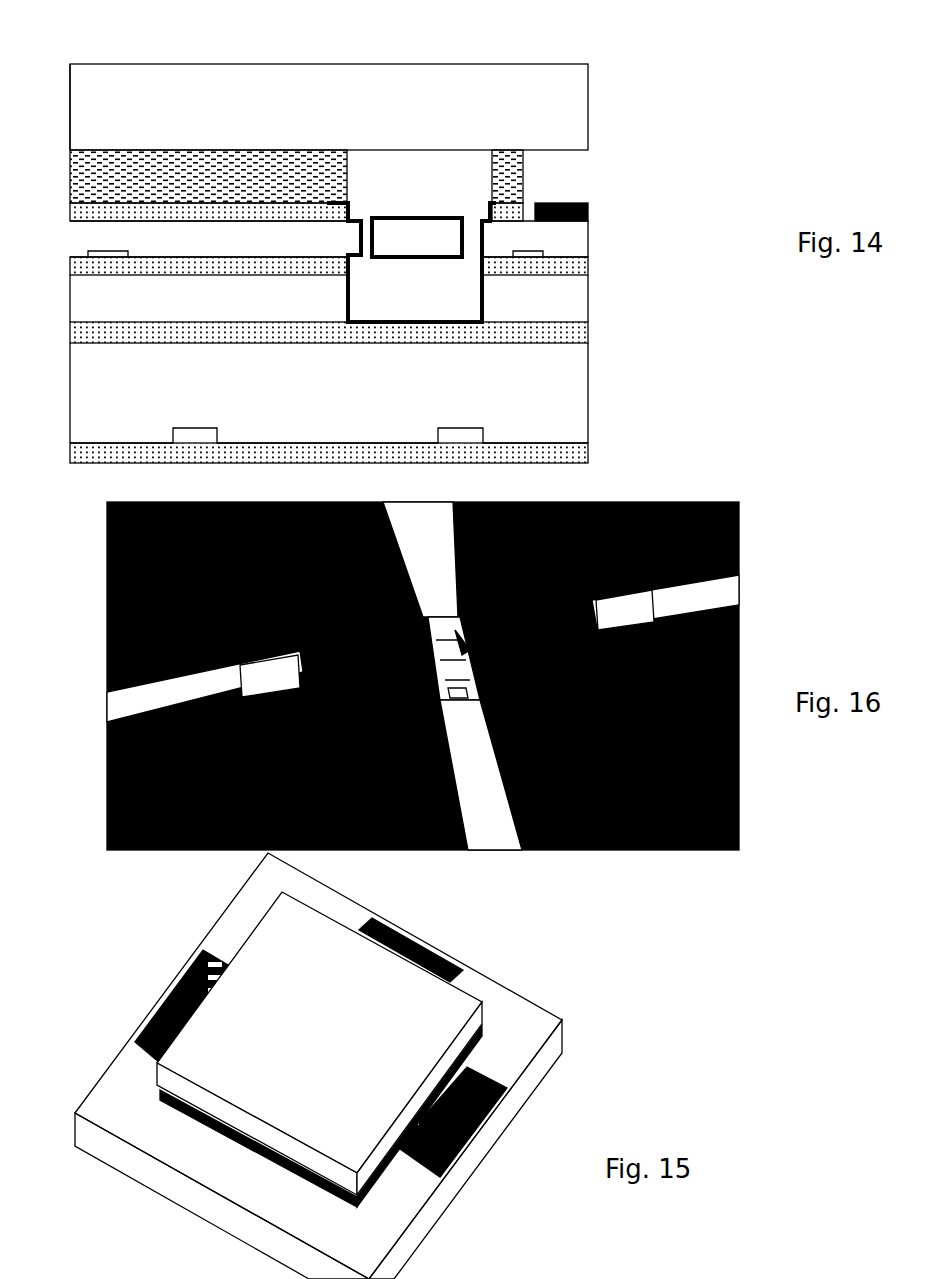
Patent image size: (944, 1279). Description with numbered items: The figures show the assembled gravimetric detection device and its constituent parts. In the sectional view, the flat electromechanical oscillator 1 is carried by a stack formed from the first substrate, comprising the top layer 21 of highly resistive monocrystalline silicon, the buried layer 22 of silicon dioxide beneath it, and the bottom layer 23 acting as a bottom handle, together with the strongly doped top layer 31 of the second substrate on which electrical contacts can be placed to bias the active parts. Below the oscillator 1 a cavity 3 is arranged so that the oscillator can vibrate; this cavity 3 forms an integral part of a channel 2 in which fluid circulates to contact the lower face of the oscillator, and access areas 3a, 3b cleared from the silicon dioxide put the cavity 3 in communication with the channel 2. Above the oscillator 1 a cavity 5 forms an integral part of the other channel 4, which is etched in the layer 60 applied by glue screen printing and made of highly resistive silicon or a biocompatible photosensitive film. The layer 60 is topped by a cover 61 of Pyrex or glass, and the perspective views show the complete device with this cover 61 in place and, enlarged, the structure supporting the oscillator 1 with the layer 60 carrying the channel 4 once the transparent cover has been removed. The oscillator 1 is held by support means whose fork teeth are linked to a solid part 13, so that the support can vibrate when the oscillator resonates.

In FIG. 14, the electromechanical oscillator 1 is at (427, 235).
In FIG. 16, the electromechanical oscillator 1 is at (470, 647).
In FIG. 16, the channel 2 is at (128, 707).
In FIG. 14, the cavity 3 is at (412, 305).
In FIG. 16, the access area 3a is at (267, 673).
In FIG. 16, the access area 3b is at (627, 612).
In FIG. 14, the channel 4 is at (435, 185).
In FIG. 16, the channel 4 is at (503, 802).
In FIG. 16, the cavity 5 is at (440, 648).
In FIG. 16, the solid part 13 is at (427, 622).
In FIG. 14, the top layer 21 is at (577, 290).
In FIG. 14, the buried layer 22 is at (573, 328).
In FIG. 14, the bottom layer 23 is at (557, 413).
In FIG. 14, the top layer 31 is at (568, 228).
In FIG. 16, the top layer 31 is at (707, 597).
In FIG. 14, the layer 60 is at (523, 183).
In FIG. 16, the layer 60 is at (662, 702).
In FIG. 15, the layer 60 is at (473, 1040).
In FIG. 14, the cover 61 is at (547, 115).
In FIG. 15, the cover 61 is at (348, 1037).